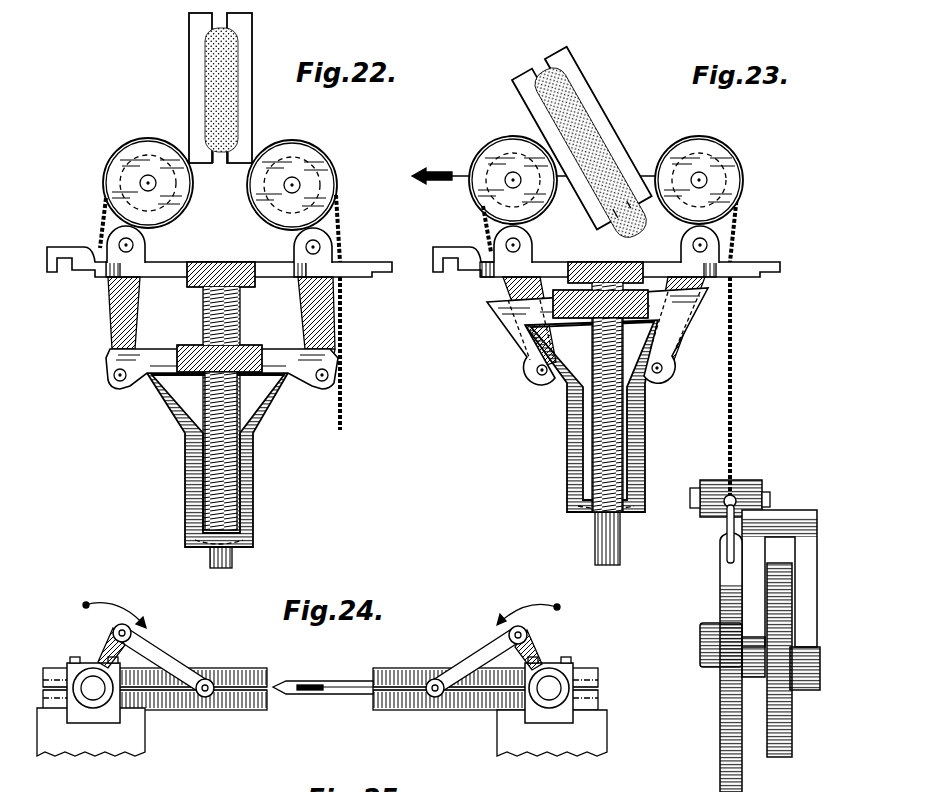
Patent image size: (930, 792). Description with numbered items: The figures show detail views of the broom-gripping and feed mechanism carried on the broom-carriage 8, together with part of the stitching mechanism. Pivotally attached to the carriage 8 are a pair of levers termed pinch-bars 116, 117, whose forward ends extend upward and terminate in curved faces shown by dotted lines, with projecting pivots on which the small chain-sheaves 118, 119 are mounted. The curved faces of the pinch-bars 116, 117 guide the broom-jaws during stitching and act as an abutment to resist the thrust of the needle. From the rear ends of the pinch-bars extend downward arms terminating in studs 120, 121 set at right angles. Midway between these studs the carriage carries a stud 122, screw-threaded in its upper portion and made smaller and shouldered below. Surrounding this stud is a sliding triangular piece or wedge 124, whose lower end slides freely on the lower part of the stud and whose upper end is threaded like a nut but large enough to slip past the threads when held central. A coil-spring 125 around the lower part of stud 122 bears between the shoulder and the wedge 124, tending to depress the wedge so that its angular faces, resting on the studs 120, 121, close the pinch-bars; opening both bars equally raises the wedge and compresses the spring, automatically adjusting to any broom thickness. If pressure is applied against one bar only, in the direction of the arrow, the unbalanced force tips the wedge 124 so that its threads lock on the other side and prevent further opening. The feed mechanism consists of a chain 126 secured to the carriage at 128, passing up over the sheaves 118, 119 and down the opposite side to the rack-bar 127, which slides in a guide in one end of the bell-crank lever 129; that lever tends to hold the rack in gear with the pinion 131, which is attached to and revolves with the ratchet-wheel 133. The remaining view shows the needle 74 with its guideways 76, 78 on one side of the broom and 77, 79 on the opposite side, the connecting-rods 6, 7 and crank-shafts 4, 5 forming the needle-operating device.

In FIG. 24, the crank-shaft 4 is at (93, 692).
In FIG. 24, the crank-shaft 5 is at (551, 692).
In FIG. 24, the connecting-rod 6 is at (172, 660).
In FIG. 24, the connecting-rod 7 is at (437, 657).
In FIG. 22, the broom-carriage 8 is at (88, 275).
In FIG. 23, the broom-carriage 8 is at (468, 276).
In FIG. 24, the needle 74 is at (290, 694).
In FIG. 24, the guideway 76 is at (228, 711).
In FIG. 24, the guideway 77 is at (422, 710).
In FIG. 24, the guideway 78 is at (230, 672).
In FIG. 24, the guideway 79 is at (407, 672).
In FIG. 22, the pinch-bar 116 is at (302, 303).
In FIG. 23, the pinch-bar 116 is at (676, 346).
In FIG. 22, the pinch-bar 117 is at (136, 316).
In FIG. 23, the pinch-bar 117 is at (505, 292).
In FIG. 22, the chain-sheave 118 is at (327, 166).
In FIG. 23, the chain-sheave 118 is at (668, 150).
In FIG. 22, the chain-sheave 119 is at (107, 160).
In FIG. 23, the chain-sheave 119 is at (480, 155).
In FIG. 22, the stud 120 is at (318, 388).
In FIG. 23, the stud 120 is at (658, 378).
In FIG. 22, the stud 121 is at (118, 383).
In FIG. 23, the stud 121 is at (535, 380).
In FIG. 22, the stud 122 is at (221, 262).
In FIG. 23, the stud 122 is at (608, 262).
In FIG. 22, the wedge 124 is at (257, 436).
In FIG. 23, the wedge 124 is at (567, 395).
In FIG. 22, the coil-spring 125 is at (235, 477).
In FIG. 23, the coil-spring 125 is at (623, 451).
In FIG. 22, the chain 126 is at (221, 165).
In FIG. 23, the chain 126 is at (578, 196).
In FIG. 22, the rack-bar 127 is at (343, 345).
In FIG. 23, the rack-bar 127 is at (720, 595).
In FIG. 22, the chain attachment point 128 is at (101, 243).
In FIG. 23, the chain attachment point 128 is at (488, 248).
In FIG. 23, the bell-crank lever 129 is at (757, 525).
In FIG. 23, the pinion 131 is at (714, 676).
In FIG. 23, the ratchet-wheel 133 is at (781, 669).